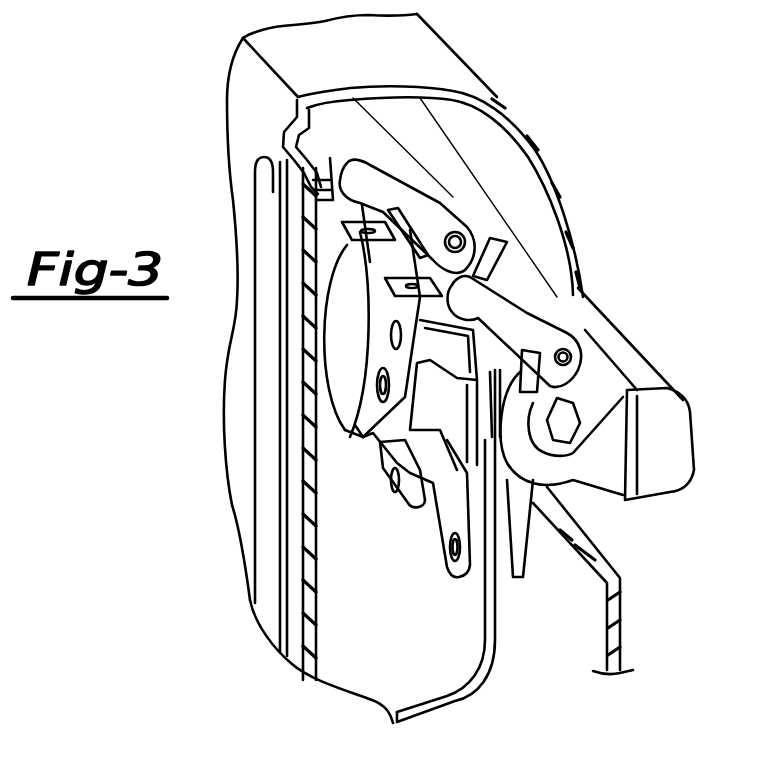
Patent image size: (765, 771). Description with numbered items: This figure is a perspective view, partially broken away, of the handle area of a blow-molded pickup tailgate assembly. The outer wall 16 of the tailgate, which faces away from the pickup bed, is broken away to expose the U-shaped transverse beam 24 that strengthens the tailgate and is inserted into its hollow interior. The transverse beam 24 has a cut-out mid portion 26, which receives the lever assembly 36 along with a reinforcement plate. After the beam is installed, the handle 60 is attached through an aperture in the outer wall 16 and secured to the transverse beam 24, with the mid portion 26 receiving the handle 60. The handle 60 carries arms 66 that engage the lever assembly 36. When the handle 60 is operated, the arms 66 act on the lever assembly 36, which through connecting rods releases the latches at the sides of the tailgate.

The outer wall 16 is at (560, 175).
The transverse beam 24 is at (495, 688).
The mid portion 26 is at (330, 165).
The lever assembly 36 is at (450, 575).
The handle 60 is at (632, 360).
The arms 66 is at (418, 206).